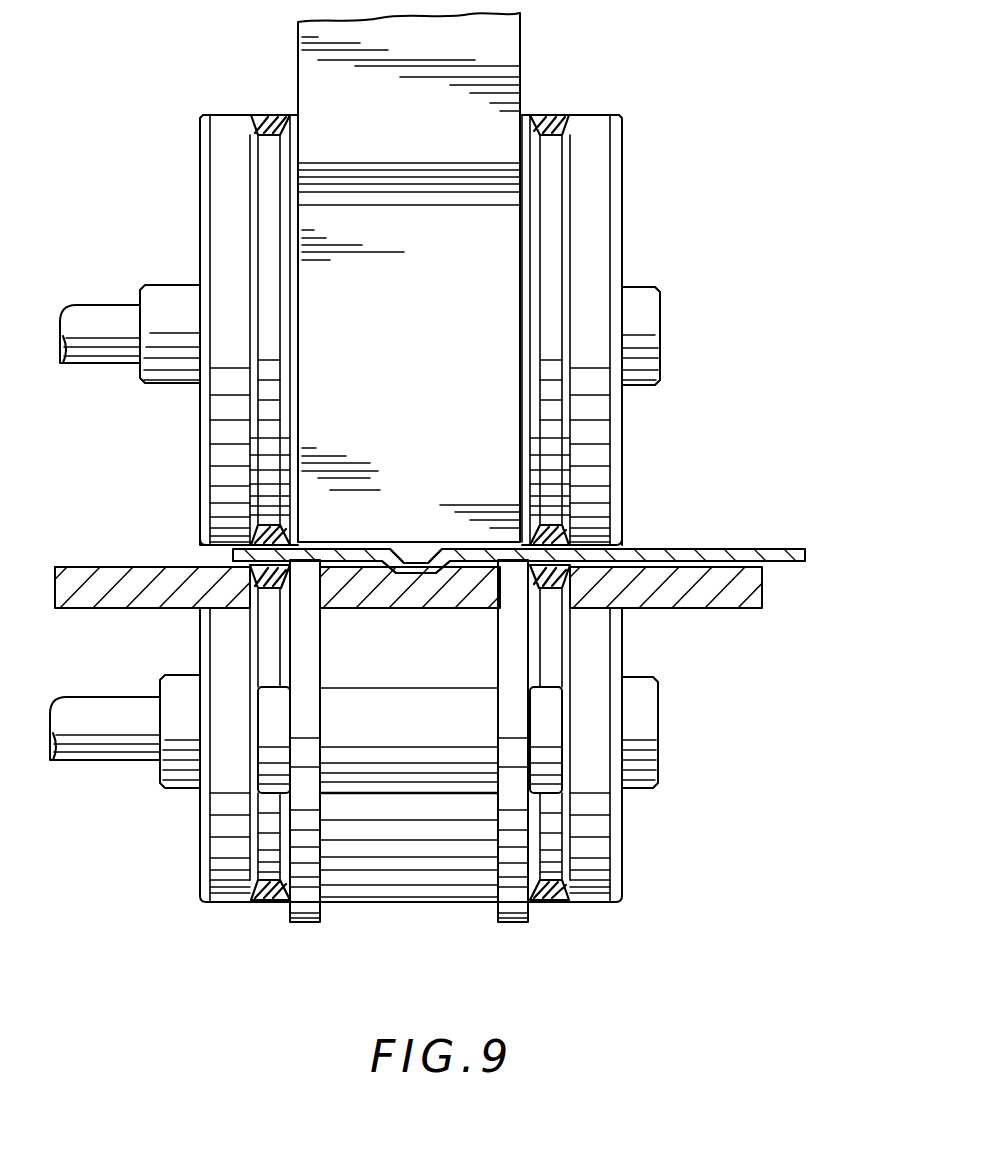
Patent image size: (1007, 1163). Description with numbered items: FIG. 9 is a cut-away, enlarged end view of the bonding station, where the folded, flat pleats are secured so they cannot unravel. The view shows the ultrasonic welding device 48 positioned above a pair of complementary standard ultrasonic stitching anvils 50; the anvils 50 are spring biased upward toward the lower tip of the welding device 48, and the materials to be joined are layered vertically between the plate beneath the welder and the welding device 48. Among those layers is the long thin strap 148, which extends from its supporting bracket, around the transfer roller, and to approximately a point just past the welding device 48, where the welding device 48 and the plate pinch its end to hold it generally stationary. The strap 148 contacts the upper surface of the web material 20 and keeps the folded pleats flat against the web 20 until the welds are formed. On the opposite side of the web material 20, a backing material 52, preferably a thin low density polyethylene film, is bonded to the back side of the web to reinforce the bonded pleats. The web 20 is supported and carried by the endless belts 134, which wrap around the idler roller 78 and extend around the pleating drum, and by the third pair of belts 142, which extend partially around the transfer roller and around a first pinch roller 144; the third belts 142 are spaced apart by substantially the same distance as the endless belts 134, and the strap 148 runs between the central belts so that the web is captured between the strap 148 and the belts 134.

The ultrasonic welding device 48 is at (440, 205).
The third pair of belts 142 is at (555, 115).
The first pinch roller 144 is at (603, 196).
The endless belts 134 is at (250, 578).
The strap 148 is at (408, 548).
The web material 20 is at (482, 560).
The backing material 52 is at (470, 575).
The idler roller 78 is at (600, 830).
The ultrasonic stitching anvils 50 is at (298, 922).